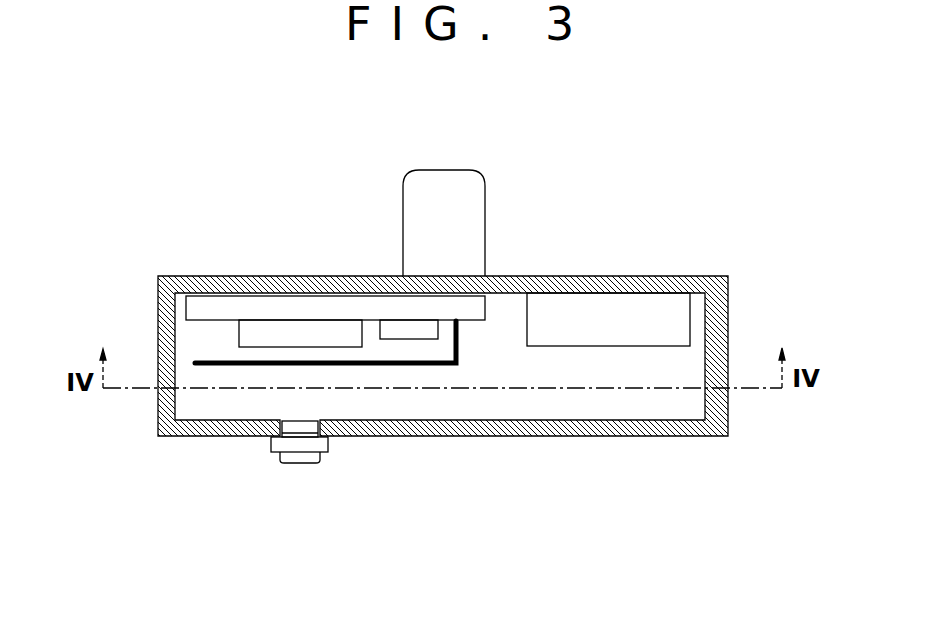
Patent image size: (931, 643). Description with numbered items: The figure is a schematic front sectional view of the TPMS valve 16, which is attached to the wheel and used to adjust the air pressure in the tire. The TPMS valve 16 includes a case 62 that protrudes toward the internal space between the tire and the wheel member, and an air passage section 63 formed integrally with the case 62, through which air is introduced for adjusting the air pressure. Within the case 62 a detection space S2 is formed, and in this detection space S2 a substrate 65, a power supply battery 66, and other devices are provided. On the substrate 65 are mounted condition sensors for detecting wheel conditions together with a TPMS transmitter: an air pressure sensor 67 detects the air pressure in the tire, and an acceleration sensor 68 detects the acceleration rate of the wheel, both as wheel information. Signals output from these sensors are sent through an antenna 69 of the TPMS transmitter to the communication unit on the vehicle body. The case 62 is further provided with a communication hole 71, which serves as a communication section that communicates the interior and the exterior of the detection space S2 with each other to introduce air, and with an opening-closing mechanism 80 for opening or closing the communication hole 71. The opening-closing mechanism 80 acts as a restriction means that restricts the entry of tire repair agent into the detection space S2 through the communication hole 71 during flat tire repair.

The TPMS valve 16 is at (641, 148).
The case 62 is at (680, 276).
The air passage section 63 is at (485, 212).
The substrate 65 is at (315, 305).
The power supply battery 66 is at (610, 300).
The air pressure sensor 67 is at (267, 332).
The acceleration sensor 68 is at (401, 325).
The antenna 69 is at (200, 362).
The communication hole 71 is at (313, 430).
The opening-closing mechanism 80 is at (268, 458).
The detection space S2 is at (690, 370).